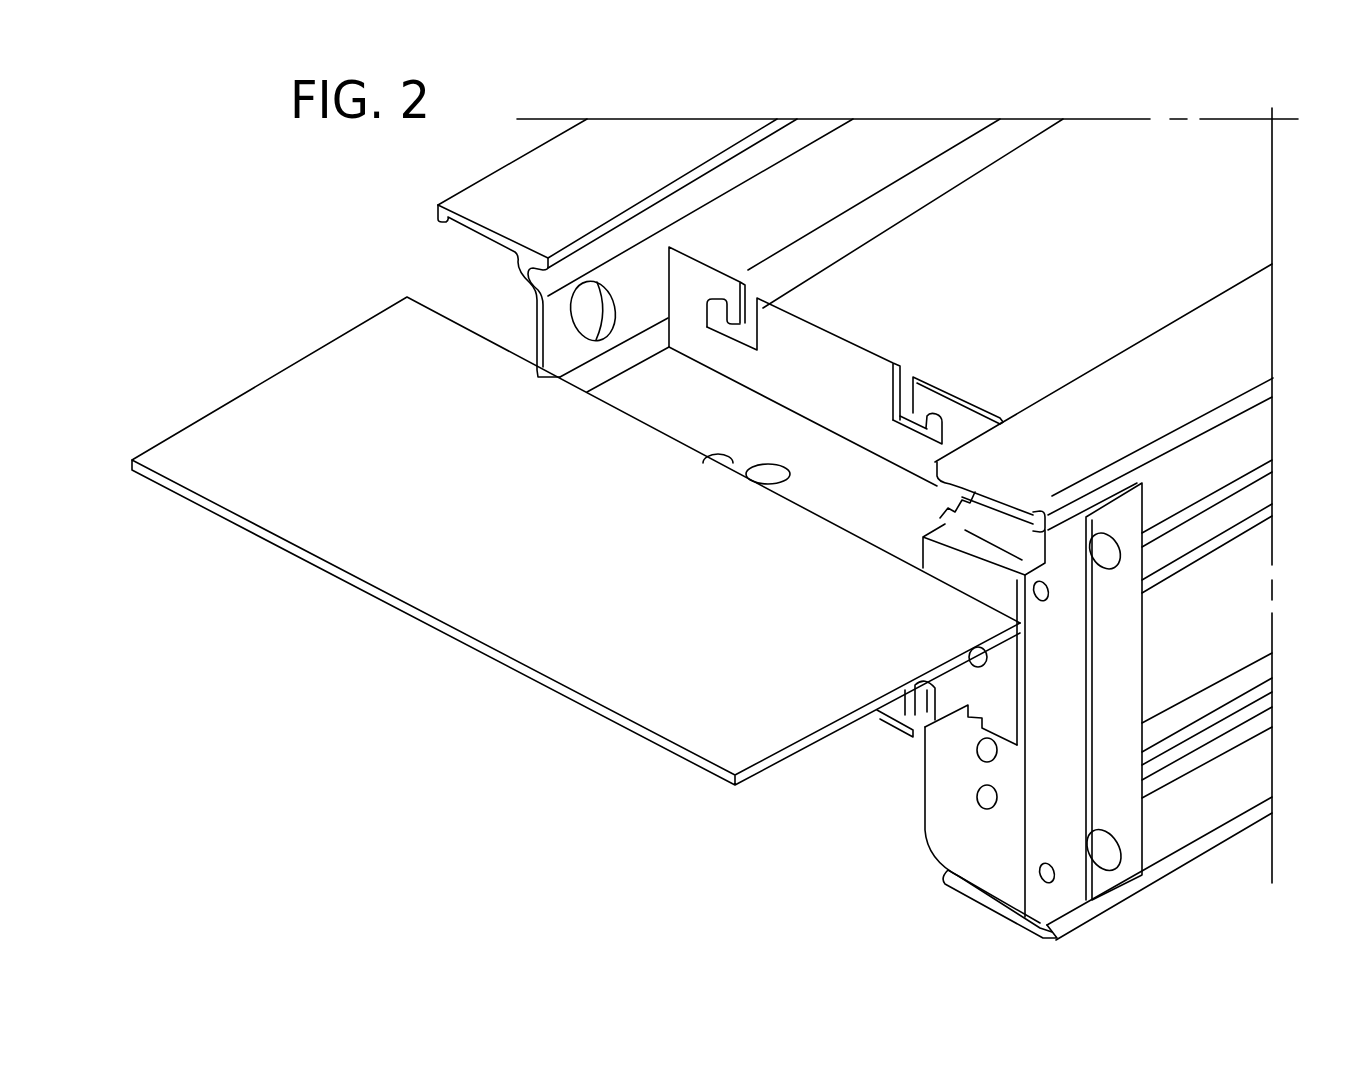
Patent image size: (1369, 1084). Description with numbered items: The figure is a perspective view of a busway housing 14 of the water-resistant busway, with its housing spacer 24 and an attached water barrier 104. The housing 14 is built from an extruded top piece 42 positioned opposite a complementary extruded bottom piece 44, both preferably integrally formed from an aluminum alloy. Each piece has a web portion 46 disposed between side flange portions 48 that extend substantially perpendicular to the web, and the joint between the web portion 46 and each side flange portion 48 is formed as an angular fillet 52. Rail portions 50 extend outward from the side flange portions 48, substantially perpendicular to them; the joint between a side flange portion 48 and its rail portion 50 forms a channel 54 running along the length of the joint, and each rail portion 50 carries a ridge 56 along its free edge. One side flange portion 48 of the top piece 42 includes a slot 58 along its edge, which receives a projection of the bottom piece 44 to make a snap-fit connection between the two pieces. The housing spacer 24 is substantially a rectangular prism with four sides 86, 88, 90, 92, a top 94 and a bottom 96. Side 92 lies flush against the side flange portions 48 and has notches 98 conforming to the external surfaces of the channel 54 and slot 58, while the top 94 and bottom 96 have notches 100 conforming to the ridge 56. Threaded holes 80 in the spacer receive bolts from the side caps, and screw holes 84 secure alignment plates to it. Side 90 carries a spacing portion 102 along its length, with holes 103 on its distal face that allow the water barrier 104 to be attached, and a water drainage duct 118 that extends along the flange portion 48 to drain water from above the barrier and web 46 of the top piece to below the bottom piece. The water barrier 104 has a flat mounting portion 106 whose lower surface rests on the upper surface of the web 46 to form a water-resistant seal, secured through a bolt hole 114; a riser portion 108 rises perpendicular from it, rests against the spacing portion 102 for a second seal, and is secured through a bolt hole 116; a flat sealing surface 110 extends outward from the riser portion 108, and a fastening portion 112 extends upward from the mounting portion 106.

The busway housing 14 is at (1138, 160).
The housing spacer 24 is at (1146, 508).
The extruded top piece 42 is at (1193, 292).
The extruded bottom piece 44 is at (1219, 860).
The web portion 46 is at (1050, 362).
The side flange portion 48 is at (1257, 592).
The rail portion 50 is at (1173, 357).
The angular fillet 52 is at (877, 222).
The channel 54 is at (937, 474).
The ridge 56 is at (1063, 503).
The slot 58 is at (930, 680).
The threaded hole 80 is at (1103, 556).
The screw hole 84 is at (1047, 598).
The side 86 is at (1142, 643).
The side 88 is at (1070, 703).
The side 90 is at (987, 897).
The side 92 is at (922, 747).
The top 94 is at (1000, 488).
The bottom 96 is at (1013, 923).
The notch 98 is at (970, 500).
The notch 100 is at (1032, 513).
The spacing portion 102 is at (993, 555).
The hole 103 is at (990, 796).
The water barrier 104 is at (536, 688).
The mounting portion 106 is at (690, 401).
The riser portion 108 is at (714, 452).
The sealing surface 110 is at (550, 546).
The fastening portion 112 is at (830, 375).
The bolt hole 114 is at (783, 470).
The bolt hole 116 is at (986, 664).
The water drainage duct 118 is at (947, 530).